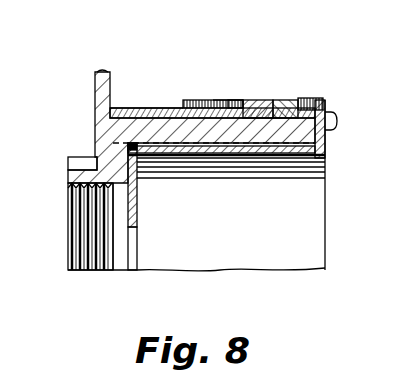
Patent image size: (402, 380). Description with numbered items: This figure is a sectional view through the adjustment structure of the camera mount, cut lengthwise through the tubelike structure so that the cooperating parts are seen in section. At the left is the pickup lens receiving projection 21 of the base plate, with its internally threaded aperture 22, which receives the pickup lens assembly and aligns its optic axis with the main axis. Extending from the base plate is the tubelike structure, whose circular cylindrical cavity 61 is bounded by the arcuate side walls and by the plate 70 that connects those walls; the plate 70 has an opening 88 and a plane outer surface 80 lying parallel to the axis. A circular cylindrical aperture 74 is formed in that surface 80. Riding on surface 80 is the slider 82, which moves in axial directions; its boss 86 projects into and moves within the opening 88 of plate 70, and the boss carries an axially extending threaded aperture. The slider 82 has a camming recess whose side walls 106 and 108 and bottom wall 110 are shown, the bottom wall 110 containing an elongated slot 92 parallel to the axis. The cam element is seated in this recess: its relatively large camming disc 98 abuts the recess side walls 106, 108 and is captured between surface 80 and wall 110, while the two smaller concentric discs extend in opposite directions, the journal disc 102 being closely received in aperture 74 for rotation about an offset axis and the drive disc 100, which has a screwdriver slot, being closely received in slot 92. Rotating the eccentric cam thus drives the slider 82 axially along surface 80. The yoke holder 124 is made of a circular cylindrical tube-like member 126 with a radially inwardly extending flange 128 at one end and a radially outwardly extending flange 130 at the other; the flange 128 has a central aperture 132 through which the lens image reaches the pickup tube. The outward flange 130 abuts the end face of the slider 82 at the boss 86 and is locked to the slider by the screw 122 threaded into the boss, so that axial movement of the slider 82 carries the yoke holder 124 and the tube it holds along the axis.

The pickup lens receiving projection 21 is at (68, 163).
The internally threaded aperture 22 is at (68, 201).
The circular cylindrical cavity 61 is at (118, 271).
The plate 70 is at (110, 121).
The circular cylindrical aperture 74 is at (252, 160).
The plane outer surface 80 is at (139, 112).
The slider 82 is at (127, 110).
The boss 86 is at (308, 99).
The opening 88 is at (332, 165).
The elongated slot 92 is at (237, 100).
The circular cylindrical camming disc 98 is at (223, 100).
The drive member disc 100 is at (256, 100).
The journal disc 102 is at (211, 161).
The recess side wall 106 is at (169, 110).
The recess side wall 108 is at (274, 100).
The recess bottom wall 110 is at (199, 100).
The screw 122 is at (337, 121).
The yoke holder 124 is at (282, 150).
The circular cylindrical tube-like member 126 is at (304, 166).
The radially inwardly extending flange 128 is at (137, 208).
The radially outwardly extending flange 130 is at (325, 152).
The central aperture 132 is at (137, 245).